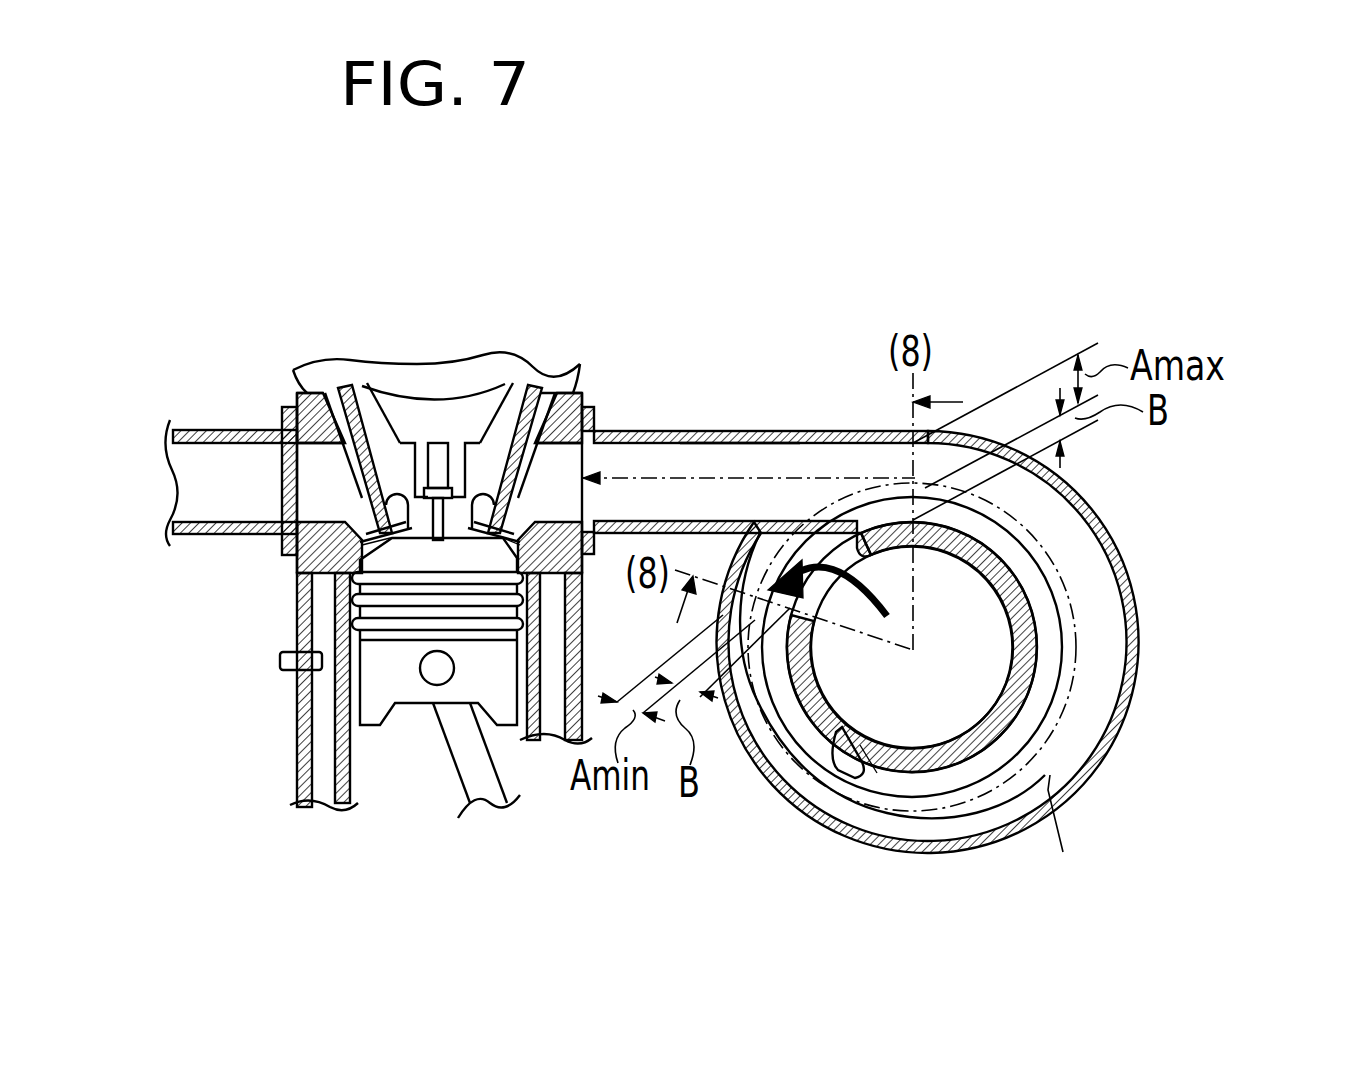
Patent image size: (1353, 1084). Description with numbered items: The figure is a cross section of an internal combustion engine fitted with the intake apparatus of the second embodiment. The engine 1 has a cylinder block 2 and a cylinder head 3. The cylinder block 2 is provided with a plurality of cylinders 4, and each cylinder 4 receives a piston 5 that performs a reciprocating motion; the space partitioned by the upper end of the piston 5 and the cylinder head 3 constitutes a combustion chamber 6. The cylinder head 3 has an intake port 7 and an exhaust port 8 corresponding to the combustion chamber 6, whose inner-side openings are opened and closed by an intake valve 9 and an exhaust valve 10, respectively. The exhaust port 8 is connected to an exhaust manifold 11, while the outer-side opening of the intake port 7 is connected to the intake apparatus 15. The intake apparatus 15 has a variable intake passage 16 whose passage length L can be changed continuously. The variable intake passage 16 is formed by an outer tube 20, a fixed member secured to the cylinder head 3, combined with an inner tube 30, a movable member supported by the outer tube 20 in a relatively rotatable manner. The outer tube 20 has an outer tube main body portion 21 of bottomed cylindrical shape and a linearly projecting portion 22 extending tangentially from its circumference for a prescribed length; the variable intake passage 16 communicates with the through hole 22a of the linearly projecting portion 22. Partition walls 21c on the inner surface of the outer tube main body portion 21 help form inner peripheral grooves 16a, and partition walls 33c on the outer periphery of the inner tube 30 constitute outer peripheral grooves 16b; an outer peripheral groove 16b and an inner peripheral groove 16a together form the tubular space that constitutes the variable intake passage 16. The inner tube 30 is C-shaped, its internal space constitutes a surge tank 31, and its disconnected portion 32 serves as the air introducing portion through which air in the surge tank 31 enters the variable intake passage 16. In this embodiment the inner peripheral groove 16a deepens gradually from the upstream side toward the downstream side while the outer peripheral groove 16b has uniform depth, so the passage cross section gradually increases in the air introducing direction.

The engine 1 is at (298, 349).
The cylinder block 2 is at (290, 737).
The cylinder head 3 is at (450, 373).
The cylinder 4 is at (362, 757).
The piston 5 is at (370, 685).
The combustion chamber 6 is at (387, 563).
The intake port 7 is at (583, 396).
The exhaust port 8 is at (307, 473).
The intake valve 9 is at (537, 390).
The exhaust valve 10 is at (342, 388).
The exhaust manifold 11 is at (215, 428).
The intake apparatus 15 is at (1140, 489).
The variable intake passage 16 is at (947, 823).
The inner peripheral groove 16a is at (1076, 838).
The outer peripheral groove 16b is at (840, 736).
The outer tube 20 is at (1146, 645).
The outer tube main body portion 21 is at (1122, 713).
The partition wall 21c is at (1097, 680).
The linearly projecting portion 22 is at (793, 426).
The through hole 22a is at (737, 447).
The inner tube 30 is at (877, 773).
The surge tank 31 is at (1005, 518).
The disconnected portion 32 is at (860, 555).
The partition wall 33c is at (1033, 718).
The passage length L is at (1086, 580).